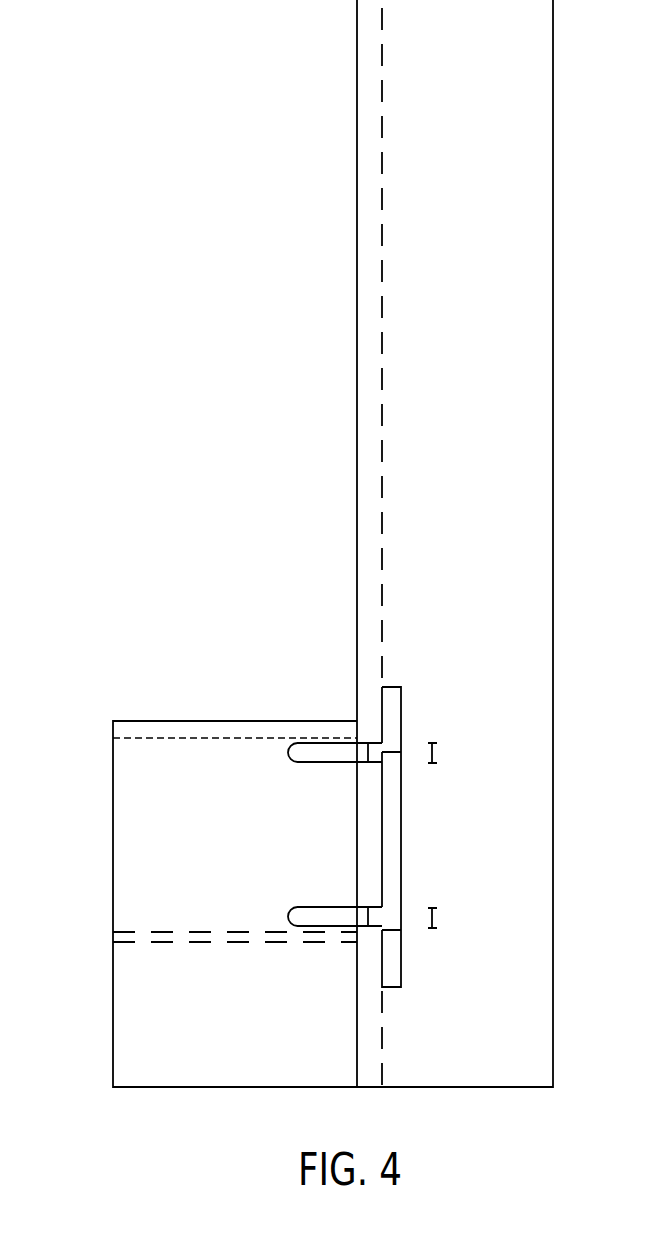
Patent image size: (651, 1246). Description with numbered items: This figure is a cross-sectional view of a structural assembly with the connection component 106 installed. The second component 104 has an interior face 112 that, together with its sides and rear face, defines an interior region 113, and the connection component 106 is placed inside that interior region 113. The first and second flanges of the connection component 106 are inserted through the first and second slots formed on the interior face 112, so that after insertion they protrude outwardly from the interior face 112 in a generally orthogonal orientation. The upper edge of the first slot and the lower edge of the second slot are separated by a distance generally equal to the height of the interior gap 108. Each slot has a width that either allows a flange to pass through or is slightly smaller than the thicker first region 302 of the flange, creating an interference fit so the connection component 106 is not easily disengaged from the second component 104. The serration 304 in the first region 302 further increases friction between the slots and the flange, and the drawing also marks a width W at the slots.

The second component 104 is at (357, 312).
The interior face 112 is at (357, 510).
The interior region 113 is at (473, 411).
The interior gap 108 is at (124, 833).
The connection component 106 is at (402, 930).
The first region 302 is at (363, 755).
The serration 304 is at (375, 764).
The weld W is at (437, 752).